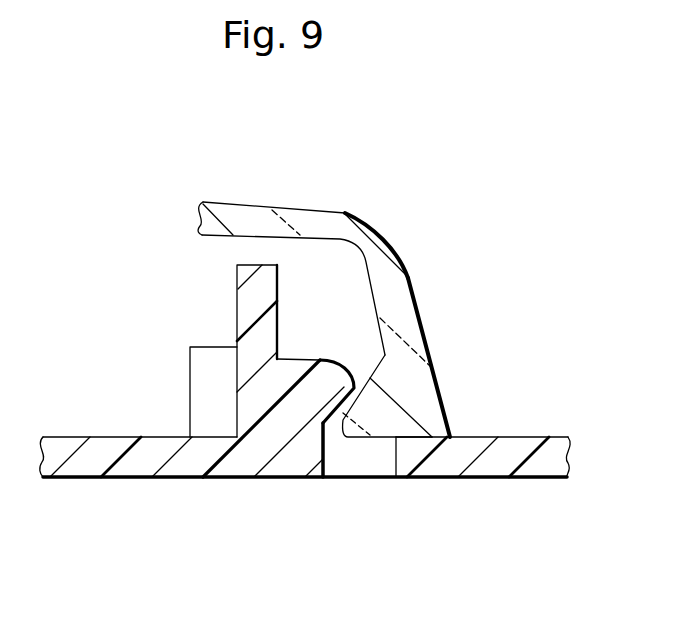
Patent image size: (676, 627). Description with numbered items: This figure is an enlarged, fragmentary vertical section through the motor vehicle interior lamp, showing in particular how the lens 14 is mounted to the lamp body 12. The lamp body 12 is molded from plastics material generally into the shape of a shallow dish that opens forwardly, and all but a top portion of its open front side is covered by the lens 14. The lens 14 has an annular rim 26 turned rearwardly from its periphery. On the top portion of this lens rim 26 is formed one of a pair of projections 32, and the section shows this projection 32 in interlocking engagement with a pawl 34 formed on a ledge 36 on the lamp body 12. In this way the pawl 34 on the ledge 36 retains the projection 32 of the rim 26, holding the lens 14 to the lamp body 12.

The lamp body 12 is at (503, 478).
The lens 14 is at (356, 222).
The annular rim 26 is at (418, 350).
The projection 32 is at (362, 453).
The pawl 34 is at (324, 378).
The ledge 36 is at (250, 310).